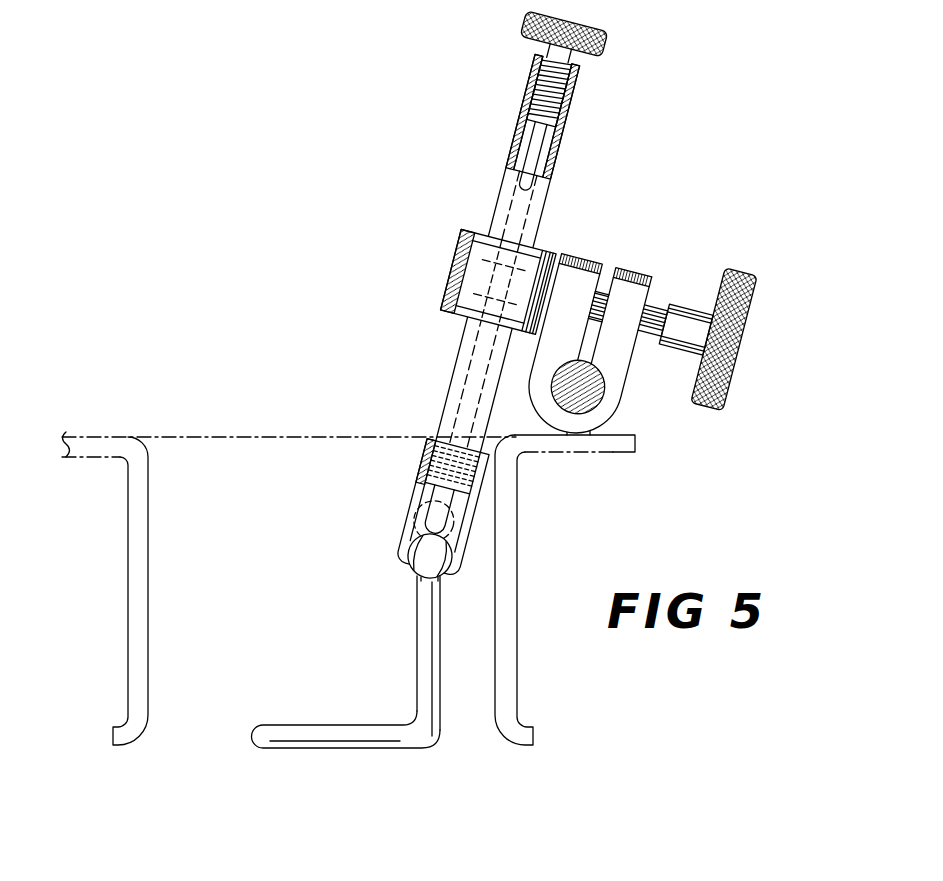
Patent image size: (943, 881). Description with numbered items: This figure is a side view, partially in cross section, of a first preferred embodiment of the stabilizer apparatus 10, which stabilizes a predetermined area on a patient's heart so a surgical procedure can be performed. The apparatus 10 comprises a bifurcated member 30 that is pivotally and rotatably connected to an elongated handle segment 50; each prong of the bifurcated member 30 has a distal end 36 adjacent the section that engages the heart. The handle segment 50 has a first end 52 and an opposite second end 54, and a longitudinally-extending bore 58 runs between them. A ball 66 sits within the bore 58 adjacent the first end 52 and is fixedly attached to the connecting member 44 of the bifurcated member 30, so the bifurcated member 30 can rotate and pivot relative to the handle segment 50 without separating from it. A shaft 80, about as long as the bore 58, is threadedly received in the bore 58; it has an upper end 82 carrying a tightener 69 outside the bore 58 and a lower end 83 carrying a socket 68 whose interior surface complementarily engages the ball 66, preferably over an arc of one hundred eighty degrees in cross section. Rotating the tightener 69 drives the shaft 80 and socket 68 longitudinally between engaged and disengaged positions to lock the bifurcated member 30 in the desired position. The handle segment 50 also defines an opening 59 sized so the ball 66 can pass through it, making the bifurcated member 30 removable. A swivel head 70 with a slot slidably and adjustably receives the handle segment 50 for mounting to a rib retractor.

The apparatus 10 is at (375, 197).
The bifurcated member 30 is at (350, 722).
The distal end 36 is at (670, 0).
The connecting member 44 is at (428, 602).
The handle segment 50 is at (498, 212).
The first end 52 is at (458, 588).
The second end 54 is at (578, 67).
The bore 58 is at (548, 188).
The opening 59 is at (410, 530).
The ball 66 is at (414, 578).
The socket 68 is at (408, 552).
The tightener 69 is at (532, 24).
The swivel head 70 is at (744, 346).
The shaft 80 is at (450, 423).
The upper end 82 is at (548, 52).
The lower end 83 is at (470, 540).